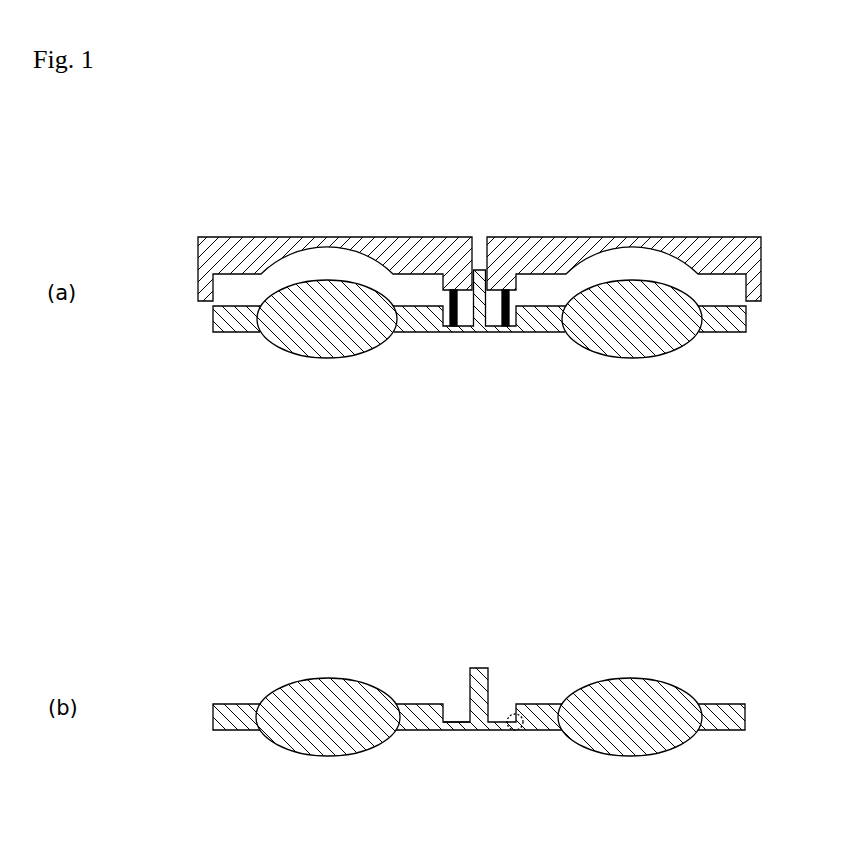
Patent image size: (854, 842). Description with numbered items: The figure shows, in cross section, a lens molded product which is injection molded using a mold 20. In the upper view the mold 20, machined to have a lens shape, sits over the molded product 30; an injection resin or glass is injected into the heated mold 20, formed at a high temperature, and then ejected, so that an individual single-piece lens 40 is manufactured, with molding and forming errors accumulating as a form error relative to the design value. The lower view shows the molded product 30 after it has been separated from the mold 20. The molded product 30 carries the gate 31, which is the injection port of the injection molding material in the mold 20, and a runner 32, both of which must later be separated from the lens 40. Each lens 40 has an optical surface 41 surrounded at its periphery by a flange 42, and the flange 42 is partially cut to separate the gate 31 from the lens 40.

The mold 20 is at (541, 237).
The molded product 30 is at (485, 332).
The gate 31 is at (515, 727).
The runner 32 is at (457, 730).
The lens 40 is at (656, 673).
The optical surface 41 is at (652, 708).
The flange 42 is at (726, 683).